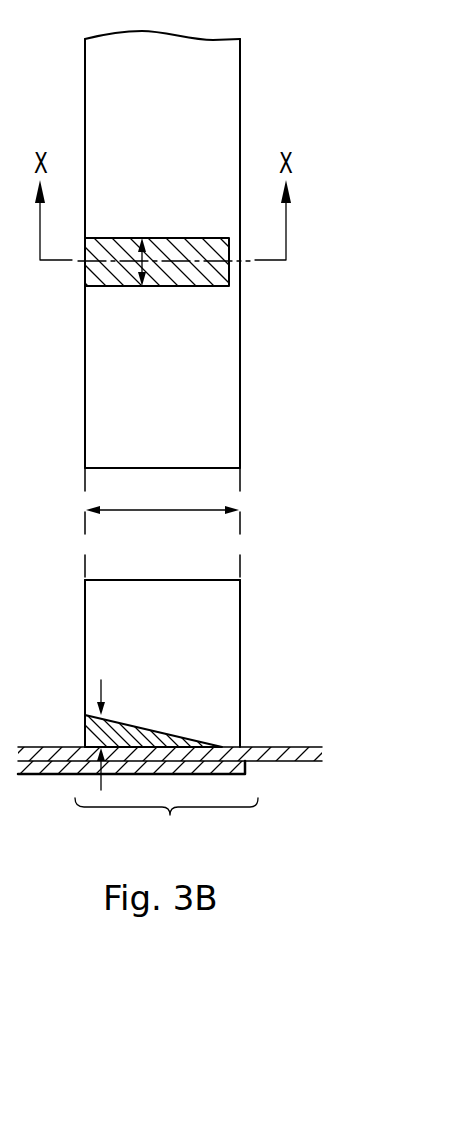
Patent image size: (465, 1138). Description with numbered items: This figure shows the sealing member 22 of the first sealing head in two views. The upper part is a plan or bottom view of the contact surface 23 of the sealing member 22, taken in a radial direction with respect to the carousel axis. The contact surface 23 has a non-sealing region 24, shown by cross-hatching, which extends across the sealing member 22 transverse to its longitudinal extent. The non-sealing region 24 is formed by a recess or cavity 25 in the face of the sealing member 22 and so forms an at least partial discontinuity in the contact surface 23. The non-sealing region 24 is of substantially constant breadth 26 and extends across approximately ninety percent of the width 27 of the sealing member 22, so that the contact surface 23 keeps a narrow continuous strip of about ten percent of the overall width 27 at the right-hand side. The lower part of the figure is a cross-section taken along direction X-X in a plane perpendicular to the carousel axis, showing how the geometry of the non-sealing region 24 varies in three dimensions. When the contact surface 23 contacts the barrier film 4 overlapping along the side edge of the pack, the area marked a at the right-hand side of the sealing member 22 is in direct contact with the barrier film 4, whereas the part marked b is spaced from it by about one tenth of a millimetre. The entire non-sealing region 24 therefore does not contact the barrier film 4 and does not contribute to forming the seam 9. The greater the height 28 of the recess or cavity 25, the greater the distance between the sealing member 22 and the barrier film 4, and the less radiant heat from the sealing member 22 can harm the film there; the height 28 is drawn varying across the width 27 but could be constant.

The sealing member 22 is at (285, 52).
The contact surface 23 is at (240, 107).
The non-sealing region 24 is at (88, 278).
The breadth 26 is at (152, 267).
The width 27 is at (162, 524).
The height 28 is at (98, 733).
The recess or cavity 25 is at (131, 742).
The barrier film 4 is at (300, 761).
The seam 9 is at (166, 824).